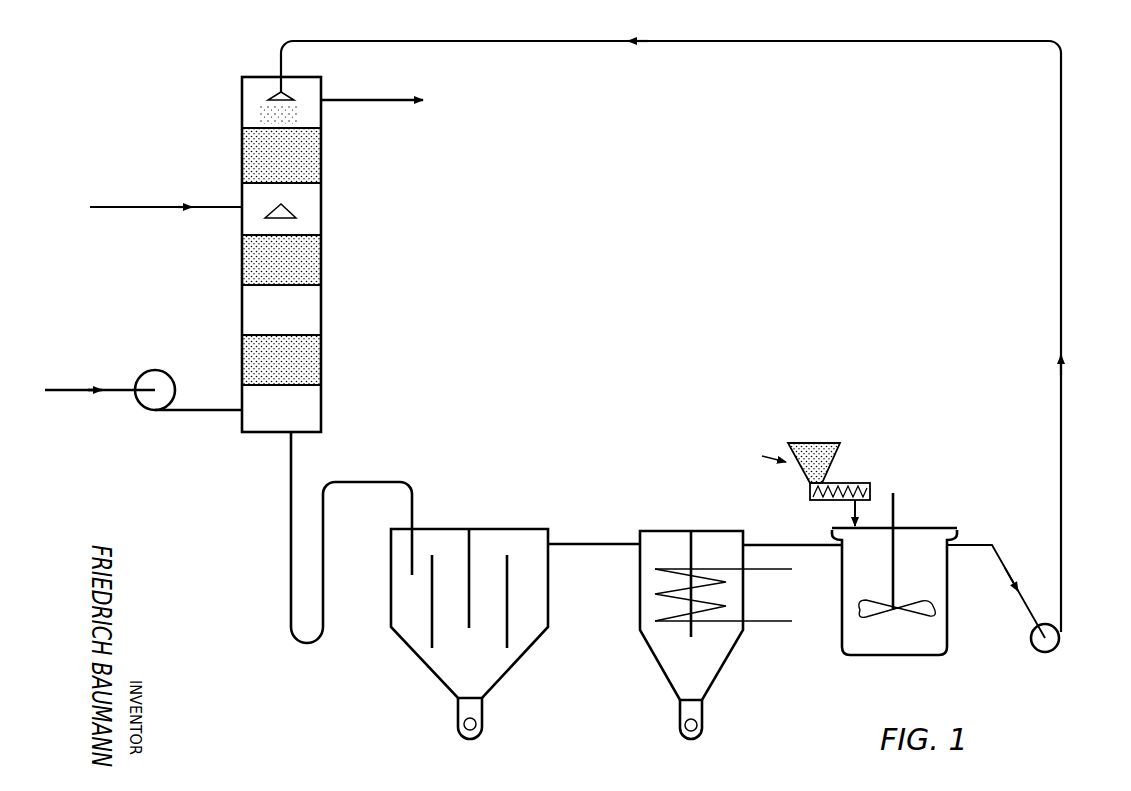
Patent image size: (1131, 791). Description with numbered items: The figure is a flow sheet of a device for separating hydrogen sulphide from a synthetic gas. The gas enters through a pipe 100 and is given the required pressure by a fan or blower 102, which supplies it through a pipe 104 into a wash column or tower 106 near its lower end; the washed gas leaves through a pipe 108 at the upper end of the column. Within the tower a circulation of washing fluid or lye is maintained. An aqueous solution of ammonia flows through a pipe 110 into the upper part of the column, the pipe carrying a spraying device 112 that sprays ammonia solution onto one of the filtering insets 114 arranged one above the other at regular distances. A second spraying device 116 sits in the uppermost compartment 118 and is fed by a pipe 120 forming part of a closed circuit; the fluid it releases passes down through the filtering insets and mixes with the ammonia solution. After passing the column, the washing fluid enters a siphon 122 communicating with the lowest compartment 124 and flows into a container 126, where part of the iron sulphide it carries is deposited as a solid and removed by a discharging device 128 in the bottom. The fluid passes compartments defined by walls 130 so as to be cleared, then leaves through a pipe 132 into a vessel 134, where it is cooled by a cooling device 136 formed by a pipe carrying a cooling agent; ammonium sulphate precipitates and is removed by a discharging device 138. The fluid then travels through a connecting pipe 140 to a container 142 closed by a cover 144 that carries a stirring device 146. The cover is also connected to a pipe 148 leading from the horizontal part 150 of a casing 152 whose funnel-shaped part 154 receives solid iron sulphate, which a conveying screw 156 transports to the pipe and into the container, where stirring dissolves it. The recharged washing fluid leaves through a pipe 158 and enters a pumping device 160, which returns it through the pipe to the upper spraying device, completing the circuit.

The pipe 100 is at (108, 388).
The fan or blower 102 is at (160, 384).
The pipe 104 is at (205, 411).
The wash column or tower 106 is at (300, 305).
The pipe 108 is at (408, 98).
The pipe 110 is at (158, 206).
The spraying device 112 is at (281, 204).
The filtering inset 114 is at (300, 258).
The spraying device 116 is at (281, 92).
The uppermost compartment 118 is at (248, 101).
The pipe 120 is at (553, 40).
The siphon 122 is at (289, 571).
The lowest compartment 124 is at (300, 402).
The container 126 is at (456, 536).
The discharging device 128 is at (484, 722).
The wall 130 is at (430, 624).
The pipe 132 is at (566, 543).
The vessel 134 is at (656, 530).
The cooling device 136 is at (655, 595).
The discharging device 138 is at (704, 722).
The connecting pipe 140 is at (822, 548).
The container 142 is at (840, 628).
The cover 144 is at (918, 528).
The stirring device 146 is at (912, 612).
The pipe 148 is at (848, 508).
The horizontal part 150 is at (852, 483).
The casing 152 is at (757, 451).
The funnel-shaped part 154 is at (818, 443).
The conveying screw 156 is at (810, 492).
The pipe 158 is at (996, 548).
The pumping device 160 is at (1060, 638).